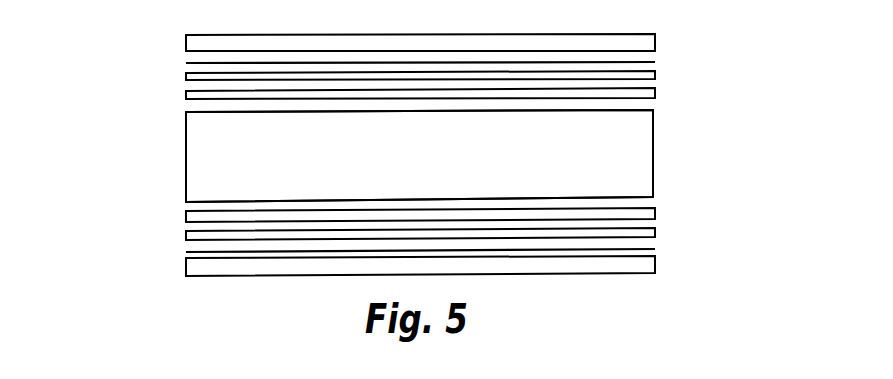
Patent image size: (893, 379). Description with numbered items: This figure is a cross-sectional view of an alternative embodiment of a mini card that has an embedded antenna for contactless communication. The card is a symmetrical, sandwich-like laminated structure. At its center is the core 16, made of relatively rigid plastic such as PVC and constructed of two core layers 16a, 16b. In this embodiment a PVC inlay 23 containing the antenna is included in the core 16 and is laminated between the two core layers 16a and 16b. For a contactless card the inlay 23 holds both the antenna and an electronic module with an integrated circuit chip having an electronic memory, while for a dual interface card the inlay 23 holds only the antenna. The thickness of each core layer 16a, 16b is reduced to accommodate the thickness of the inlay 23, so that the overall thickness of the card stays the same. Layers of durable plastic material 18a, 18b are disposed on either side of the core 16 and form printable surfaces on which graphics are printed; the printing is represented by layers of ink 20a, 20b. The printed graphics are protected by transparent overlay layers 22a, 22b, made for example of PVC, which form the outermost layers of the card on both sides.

The core sheet 16 is at (175, 92).
The core layer 16a is at (655, 93).
The core layer 16b is at (655, 213).
The durable plastic material layer 18a is at (655, 75).
The durable plastic material layer 18b is at (655, 231).
The ink layer 20a is at (662, 62).
The ink layer 20b is at (657, 248).
The transparent overlay layer 22a is at (192, 43).
The transparent overlay layer 22b is at (192, 268).
The PVC inlay 23 is at (653, 143).